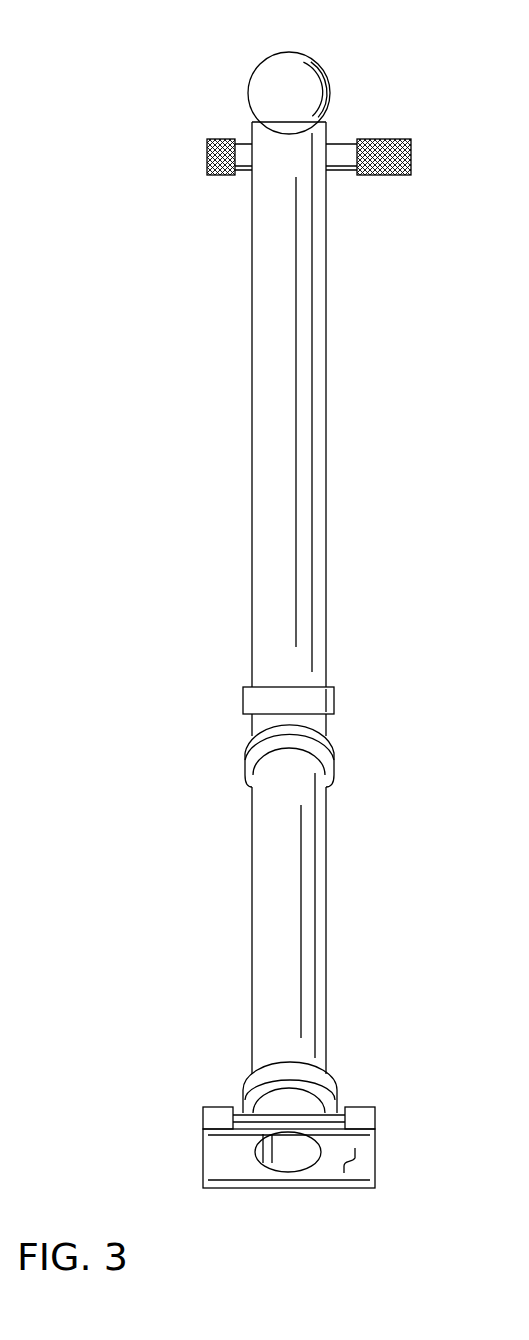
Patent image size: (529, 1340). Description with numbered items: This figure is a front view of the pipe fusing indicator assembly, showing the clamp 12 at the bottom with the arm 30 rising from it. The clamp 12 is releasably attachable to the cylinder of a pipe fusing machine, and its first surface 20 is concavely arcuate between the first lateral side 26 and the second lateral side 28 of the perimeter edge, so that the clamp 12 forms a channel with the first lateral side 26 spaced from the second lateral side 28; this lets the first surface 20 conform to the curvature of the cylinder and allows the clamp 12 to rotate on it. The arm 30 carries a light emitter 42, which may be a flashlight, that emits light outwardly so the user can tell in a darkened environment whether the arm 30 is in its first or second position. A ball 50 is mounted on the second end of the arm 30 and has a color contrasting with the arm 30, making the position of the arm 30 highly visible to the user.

The ball 50 is at (263, 61).
The light emitter 42 is at (380, 139).
The arm 30 is at (326, 500).
The clamp 12 is at (222, 1107).
The first lateral side 26 is at (242, 1130).
The second lateral side 28 is at (310, 1188).
The first surface 20 is at (356, 1159).